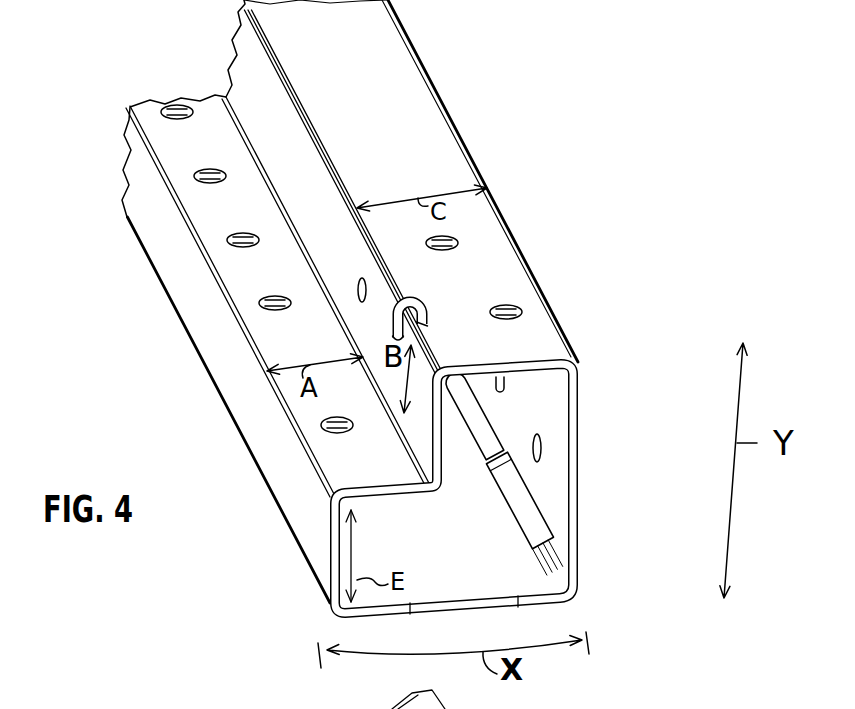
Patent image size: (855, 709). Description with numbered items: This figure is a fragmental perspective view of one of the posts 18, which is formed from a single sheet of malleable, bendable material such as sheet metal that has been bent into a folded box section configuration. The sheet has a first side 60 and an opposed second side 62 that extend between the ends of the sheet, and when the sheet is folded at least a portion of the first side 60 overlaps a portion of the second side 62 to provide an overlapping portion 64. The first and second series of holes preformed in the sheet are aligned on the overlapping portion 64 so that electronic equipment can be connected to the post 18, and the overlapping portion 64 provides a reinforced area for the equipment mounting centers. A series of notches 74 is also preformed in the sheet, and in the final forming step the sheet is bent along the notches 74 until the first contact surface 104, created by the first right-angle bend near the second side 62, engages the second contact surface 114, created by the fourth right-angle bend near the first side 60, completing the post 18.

The post 18 is at (426, 307).
The first side 60 is at (414, 503).
The second side 62 is at (327, 484).
The overlapping portion 64 is at (370, 516).
The notches 74 is at (530, 528).
The first contact surface 104 is at (413, 498).
The second contact surface 114 is at (345, 500).